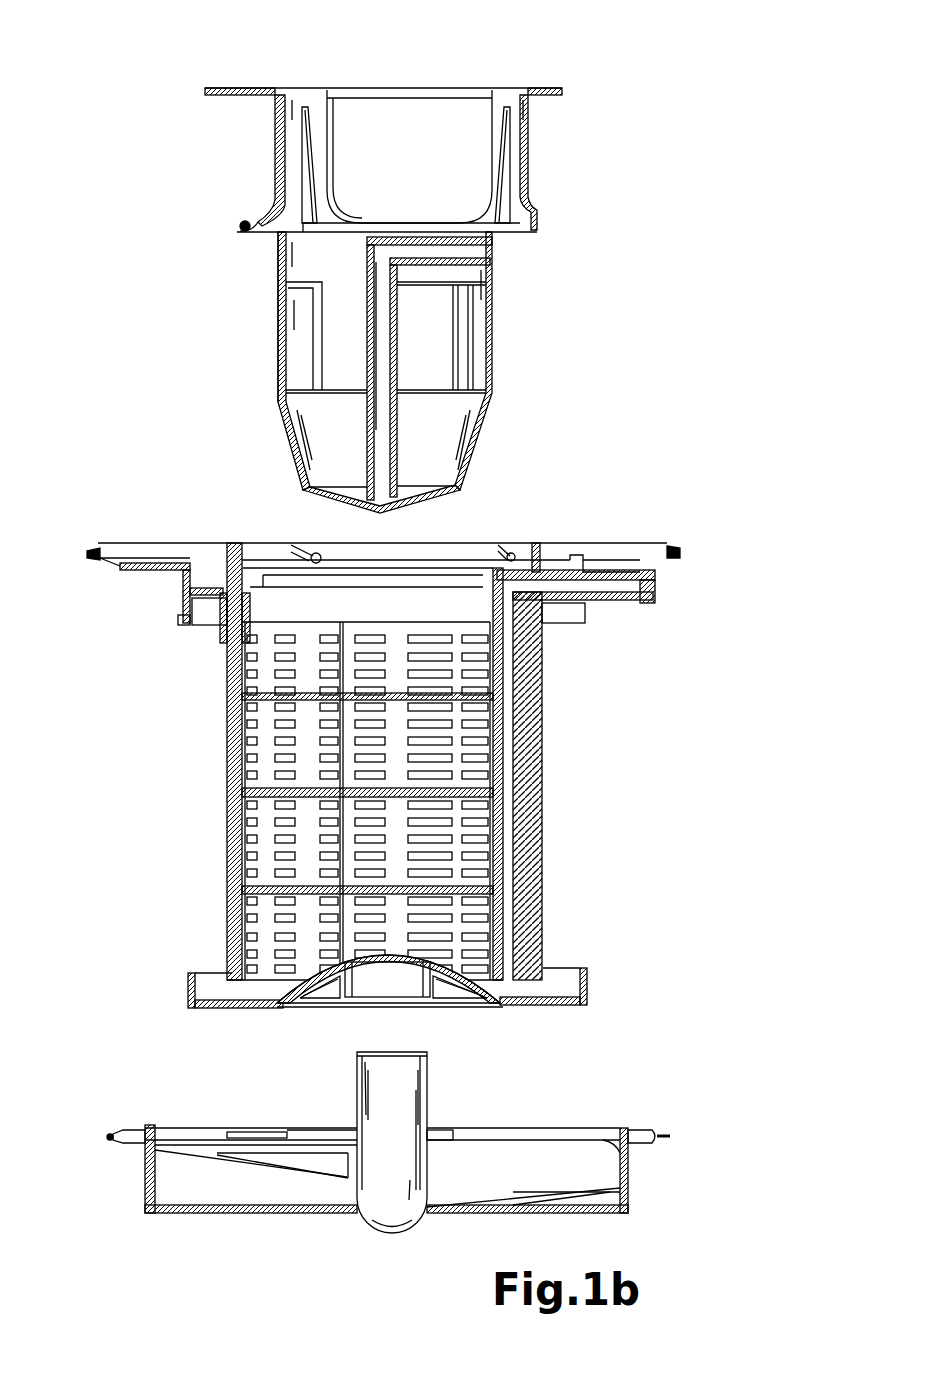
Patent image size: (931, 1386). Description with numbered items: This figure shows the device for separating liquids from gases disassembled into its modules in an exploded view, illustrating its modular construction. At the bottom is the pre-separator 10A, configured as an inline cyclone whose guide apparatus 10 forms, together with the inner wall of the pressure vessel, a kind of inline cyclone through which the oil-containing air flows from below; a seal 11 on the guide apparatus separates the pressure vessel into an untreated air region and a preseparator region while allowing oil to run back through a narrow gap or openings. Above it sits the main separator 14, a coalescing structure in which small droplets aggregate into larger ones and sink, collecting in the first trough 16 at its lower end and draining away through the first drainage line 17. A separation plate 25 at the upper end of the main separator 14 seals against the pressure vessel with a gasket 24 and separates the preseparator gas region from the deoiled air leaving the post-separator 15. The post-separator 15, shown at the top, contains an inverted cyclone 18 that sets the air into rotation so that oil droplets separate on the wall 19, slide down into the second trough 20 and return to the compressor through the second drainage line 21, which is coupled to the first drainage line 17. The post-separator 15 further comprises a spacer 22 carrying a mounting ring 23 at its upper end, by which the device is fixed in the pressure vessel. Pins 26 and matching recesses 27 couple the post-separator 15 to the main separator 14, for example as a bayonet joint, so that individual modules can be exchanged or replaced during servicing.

The guide apparatus 10 is at (175, 1180).
The pre-separator 10A is at (120, 1176).
The seal 11 is at (110, 1132).
The main separator 14 is at (222, 810).
The post-separator 15 is at (513, 288).
The first trough 16 is at (188, 988).
The first drainage line 17 is at (518, 690).
The inverted cyclone 18 is at (300, 302).
The wall of the inverted cyclone 19 is at (278, 320).
The second trough 20 is at (447, 474).
The second drainage line 21 is at (397, 355).
The spacer 22 is at (545, 160).
The mounting ring 23 is at (473, 88).
The gasket 24 is at (684, 544).
The separation plate 25 is at (628, 548).
The pins 26 is at (243, 210).
The recesses 27 is at (310, 543).